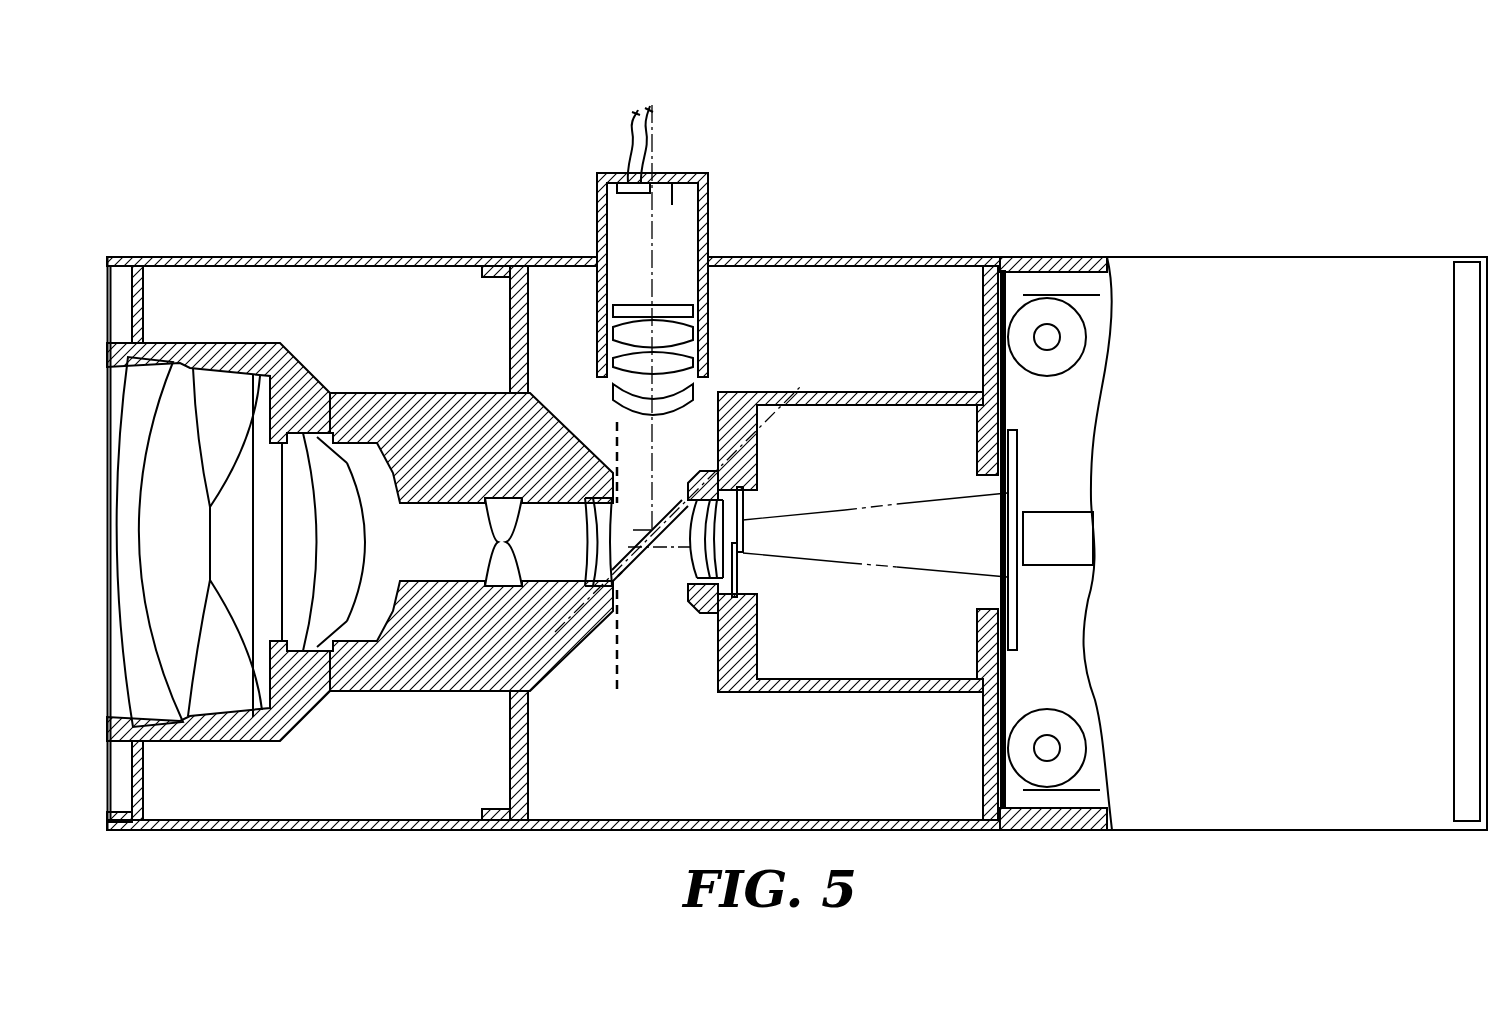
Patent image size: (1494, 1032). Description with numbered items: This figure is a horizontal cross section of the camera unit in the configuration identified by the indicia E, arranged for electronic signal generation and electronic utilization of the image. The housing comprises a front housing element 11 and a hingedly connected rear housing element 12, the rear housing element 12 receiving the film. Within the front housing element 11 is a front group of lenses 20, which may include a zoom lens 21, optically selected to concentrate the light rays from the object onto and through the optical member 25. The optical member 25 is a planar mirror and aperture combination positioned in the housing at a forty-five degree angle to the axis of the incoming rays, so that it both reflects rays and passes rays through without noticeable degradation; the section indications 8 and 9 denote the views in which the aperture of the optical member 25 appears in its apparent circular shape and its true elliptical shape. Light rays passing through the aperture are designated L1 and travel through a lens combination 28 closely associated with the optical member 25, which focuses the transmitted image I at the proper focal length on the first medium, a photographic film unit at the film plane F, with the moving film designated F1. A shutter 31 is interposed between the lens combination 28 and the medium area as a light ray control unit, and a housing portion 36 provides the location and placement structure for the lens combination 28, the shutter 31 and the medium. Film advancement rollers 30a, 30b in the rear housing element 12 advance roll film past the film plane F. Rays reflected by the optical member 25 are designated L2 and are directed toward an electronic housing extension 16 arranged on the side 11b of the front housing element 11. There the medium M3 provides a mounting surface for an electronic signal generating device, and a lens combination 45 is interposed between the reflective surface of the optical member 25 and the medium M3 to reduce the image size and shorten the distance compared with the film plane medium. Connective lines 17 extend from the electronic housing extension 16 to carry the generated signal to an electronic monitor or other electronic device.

The electronic utilization system E is at (845, 164).
The front housing element 11 is at (256, 248).
The side of front housing 11b is at (441, 257).
The rear housing element 12 is at (1200, 253).
The electronic housing extension 16 is at (714, 199).
The connective lines 17 is at (623, 133).
The medium for electronic signal generation M3 is at (678, 163).
The image I is at (668, 207).
The reflected light rays L2 is at (653, 255).
The lens combination 45 is at (673, 300).
The front group of lenses 20 is at (303, 408).
The zoom lens 21 is at (215, 344).
The optical member 25 is at (650, 573).
The lens combination 28 is at (640, 568).
The shutter 31 is at (745, 511).
The housing portion 36 is at (862, 693).
The passing light rays L1 is at (860, 567).
The film plane F is at (1007, 583).
The film F1 is at (1007, 396).
The film advancement roller 30a is at (1072, 340).
The film advancement roller 30b is at (1068, 752).
The section line 8 is at (650, 683).
The section line 9 is at (540, 663).